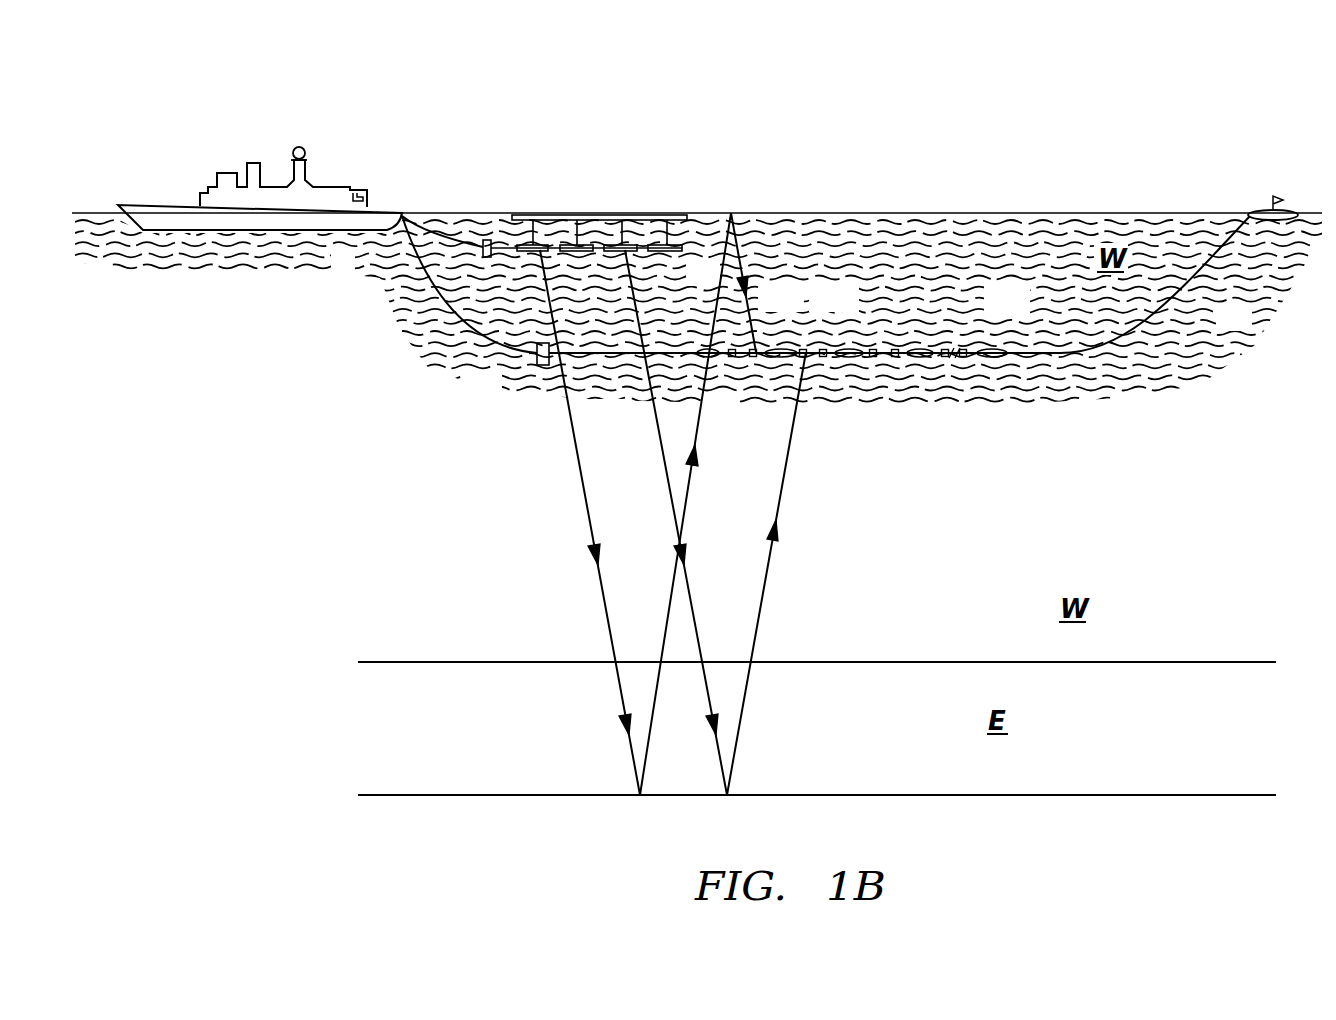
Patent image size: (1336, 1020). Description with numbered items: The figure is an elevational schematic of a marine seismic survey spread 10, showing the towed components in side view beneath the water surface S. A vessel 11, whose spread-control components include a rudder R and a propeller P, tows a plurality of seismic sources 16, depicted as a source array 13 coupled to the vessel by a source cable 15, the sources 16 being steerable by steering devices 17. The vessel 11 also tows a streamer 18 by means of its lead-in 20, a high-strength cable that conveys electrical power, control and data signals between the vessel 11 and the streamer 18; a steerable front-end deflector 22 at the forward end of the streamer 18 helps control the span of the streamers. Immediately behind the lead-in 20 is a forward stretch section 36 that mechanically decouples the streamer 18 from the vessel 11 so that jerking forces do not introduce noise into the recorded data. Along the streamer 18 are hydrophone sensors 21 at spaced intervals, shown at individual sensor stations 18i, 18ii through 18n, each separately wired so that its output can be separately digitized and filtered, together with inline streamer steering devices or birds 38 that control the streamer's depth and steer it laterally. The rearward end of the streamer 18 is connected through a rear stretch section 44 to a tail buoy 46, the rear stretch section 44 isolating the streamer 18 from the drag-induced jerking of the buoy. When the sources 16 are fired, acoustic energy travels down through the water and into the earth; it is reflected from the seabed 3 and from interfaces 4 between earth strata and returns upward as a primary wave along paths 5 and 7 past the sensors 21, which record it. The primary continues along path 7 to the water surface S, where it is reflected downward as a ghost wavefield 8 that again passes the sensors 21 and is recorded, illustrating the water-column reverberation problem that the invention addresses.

The spread 10 is at (806, 73).
The vessel 11 is at (145, 205).
The seismic source array 13 is at (607, 217).
The source cable 15 is at (433, 230).
The seismic sources 16 is at (633, 252).
The steering devices 17 is at (487, 240).
The streamer 18 is at (901, 326).
The first receiver 18i is at (744, 350).
The second receiver 18ii is at (800, 350).
The nth receiver 18n is at (968, 350).
The lead-in 20 is at (440, 307).
The hydrophone sensor 21 is at (731, 357).
The steerable front-end deflector 22 is at (535, 363).
The forward stretch section 36 is at (623, 356).
The inline streamer steering device 38 is at (780, 357).
The rear stretch section 44 is at (1182, 295).
The tail buoy 46 is at (1255, 212).
The seabed 3 is at (505, 661).
The interfaces between earth formations 4 is at (808, 794).
The paths 5 is at (768, 582).
The path 7 is at (690, 493).
The ghost wavefield 8 is at (736, 228).
The water surface S is at (730, 213).
The vessel propeller P is at (400, 218).
The vessel rudder R is at (402, 218).